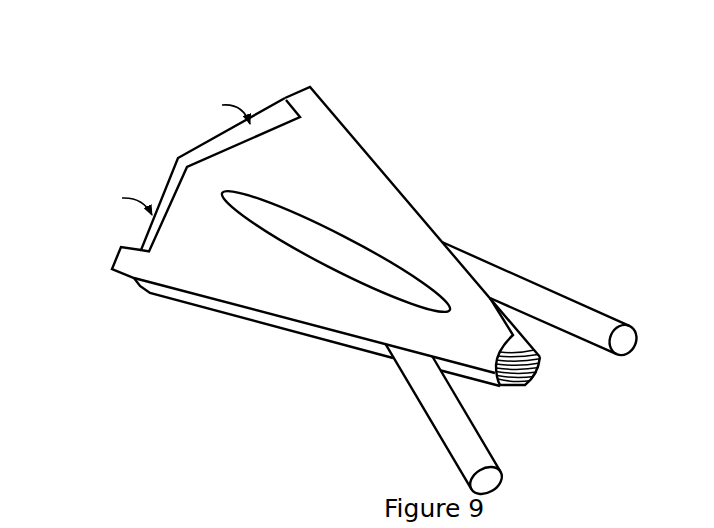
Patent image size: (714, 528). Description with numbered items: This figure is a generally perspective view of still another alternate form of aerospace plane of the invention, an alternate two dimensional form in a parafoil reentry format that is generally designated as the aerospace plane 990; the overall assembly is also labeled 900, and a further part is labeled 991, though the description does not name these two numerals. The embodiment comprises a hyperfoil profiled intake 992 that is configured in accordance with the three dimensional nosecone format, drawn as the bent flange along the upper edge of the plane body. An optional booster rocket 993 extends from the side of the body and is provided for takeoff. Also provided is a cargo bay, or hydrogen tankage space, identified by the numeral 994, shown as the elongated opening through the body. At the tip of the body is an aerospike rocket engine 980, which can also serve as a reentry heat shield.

The mounting fixture assembly 900 is at (172, 110).
The aerospace plane 990 is at (424, 208).
The support rod 991 is at (446, 330).
The hyperfoil profiled intake 992 is at (270, 106).
The booster rocket 993 is at (527, 277).
The cargo bay 994 is at (358, 197).
The aerospike rocket engine 980 is at (542, 368).